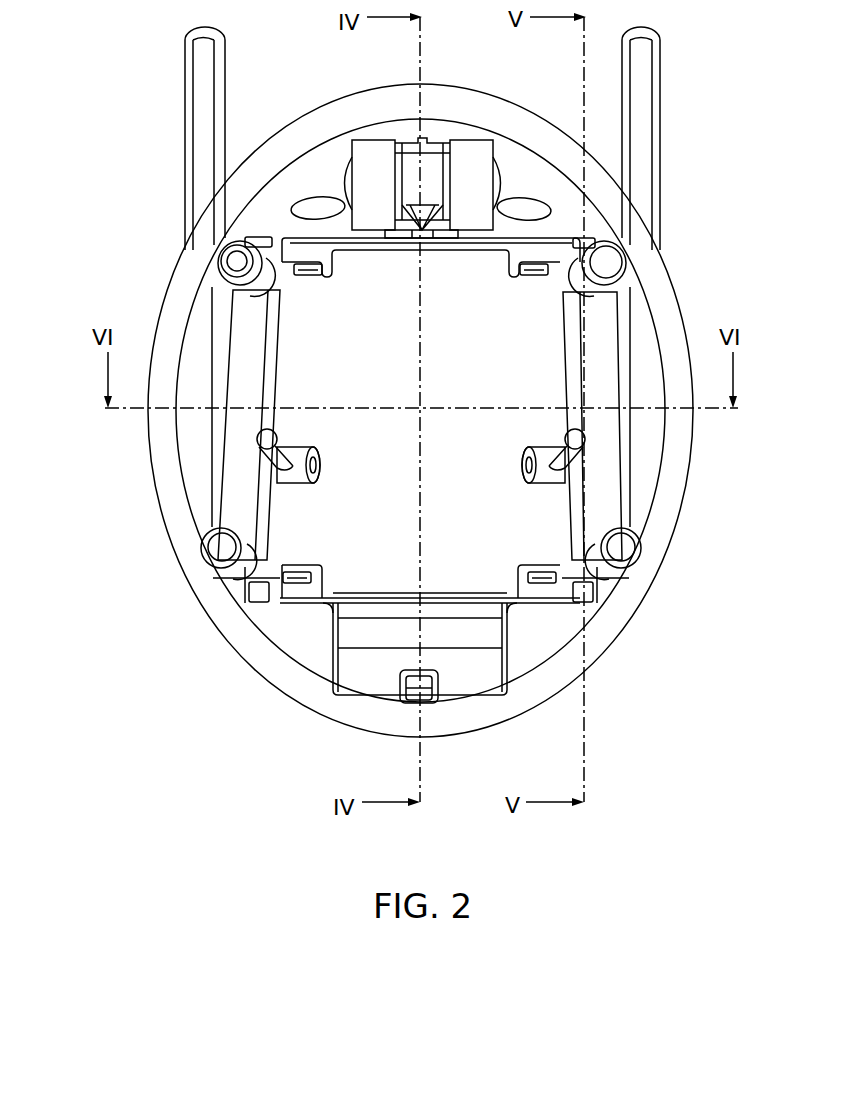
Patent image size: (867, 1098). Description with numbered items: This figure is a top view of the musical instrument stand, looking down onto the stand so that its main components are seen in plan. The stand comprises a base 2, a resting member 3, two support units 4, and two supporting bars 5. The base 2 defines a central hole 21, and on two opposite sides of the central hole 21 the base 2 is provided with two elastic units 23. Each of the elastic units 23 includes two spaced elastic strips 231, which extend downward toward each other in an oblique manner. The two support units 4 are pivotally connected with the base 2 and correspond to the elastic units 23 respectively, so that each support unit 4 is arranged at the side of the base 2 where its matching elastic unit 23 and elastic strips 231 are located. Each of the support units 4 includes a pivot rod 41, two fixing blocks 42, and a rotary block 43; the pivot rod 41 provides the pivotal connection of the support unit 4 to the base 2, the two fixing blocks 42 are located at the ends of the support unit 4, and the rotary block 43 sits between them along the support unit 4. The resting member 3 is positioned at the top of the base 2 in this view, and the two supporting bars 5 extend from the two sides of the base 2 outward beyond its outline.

The base 2 is at (668, 257).
The resting member 3 is at (352, 152).
The support unit 4 is at (230, 489).
The supporting bar 5 is at (185, 85).
The central hole 21 is at (538, 338).
The elastic unit 23 is at (250, 238).
The elastic strip 231 is at (258, 602).
The pivot rod 41 is at (240, 262).
The fixing block 42 is at (232, 268).
The rotary block 43 is at (266, 438).